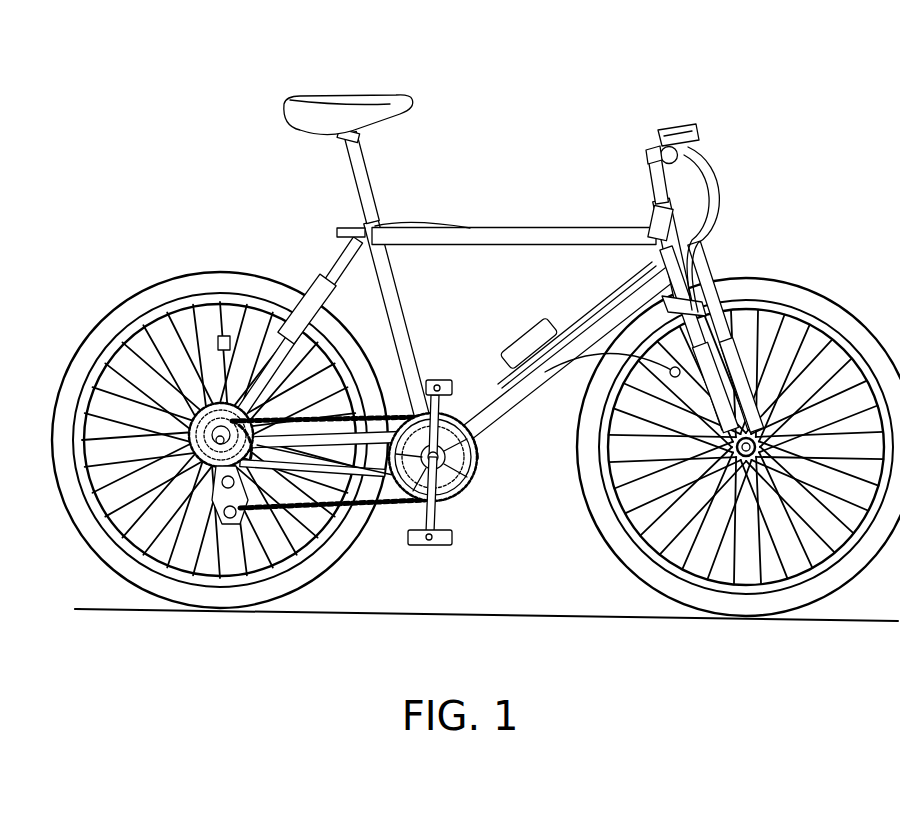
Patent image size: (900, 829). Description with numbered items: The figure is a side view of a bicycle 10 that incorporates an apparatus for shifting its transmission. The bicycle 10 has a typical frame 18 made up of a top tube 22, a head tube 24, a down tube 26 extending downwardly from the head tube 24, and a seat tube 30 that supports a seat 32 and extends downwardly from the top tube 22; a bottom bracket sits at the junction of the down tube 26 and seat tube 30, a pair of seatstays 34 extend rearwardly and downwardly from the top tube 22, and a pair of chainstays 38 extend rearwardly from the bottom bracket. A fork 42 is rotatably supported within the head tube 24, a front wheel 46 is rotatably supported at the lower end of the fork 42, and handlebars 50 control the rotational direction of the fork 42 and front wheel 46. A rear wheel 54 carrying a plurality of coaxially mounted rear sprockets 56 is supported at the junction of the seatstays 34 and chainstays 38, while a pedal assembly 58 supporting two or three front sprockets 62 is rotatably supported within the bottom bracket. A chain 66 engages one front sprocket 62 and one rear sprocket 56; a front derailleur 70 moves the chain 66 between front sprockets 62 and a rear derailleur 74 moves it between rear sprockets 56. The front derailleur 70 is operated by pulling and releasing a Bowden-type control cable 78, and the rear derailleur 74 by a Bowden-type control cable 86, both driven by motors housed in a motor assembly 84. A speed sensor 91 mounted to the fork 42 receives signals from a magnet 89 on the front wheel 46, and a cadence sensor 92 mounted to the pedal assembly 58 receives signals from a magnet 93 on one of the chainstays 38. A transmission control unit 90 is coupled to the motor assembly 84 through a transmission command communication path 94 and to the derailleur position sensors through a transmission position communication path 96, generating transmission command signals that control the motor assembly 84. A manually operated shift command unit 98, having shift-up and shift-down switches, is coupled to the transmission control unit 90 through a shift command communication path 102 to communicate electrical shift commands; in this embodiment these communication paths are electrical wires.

The bicycle 10 is at (518, 103).
The frame 18 is at (485, 316).
The top tube 22 is at (521, 226).
The head tube 24 is at (690, 253).
The down tube 26 is at (510, 405).
The seat tube 30 is at (418, 312).
The seat 32 is at (342, 108).
The seatstays 34 is at (324, 308).
The chainstays 38 is at (332, 332).
The fork 42 is at (747, 295).
The front wheel 46 is at (836, 305).
The handlebars 50 is at (660, 160).
The rear wheel 54 is at (202, 418).
The rear sprockets 56 is at (112, 345).
The pedal assembly 58 is at (279, 459).
The front sprockets 62 is at (478, 474).
The chain 66 is at (365, 500).
The front derailleur 70 is at (436, 383).
The rear derailleur 74 is at (214, 518).
The control cable 78 is at (445, 390).
The motor assembly 84 is at (520, 322).
The control cable 86 is at (224, 345).
The magnet 89 is at (668, 386).
The transmission control unit 90 is at (690, 128).
The speed sensor 91 is at (612, 350).
The cadence sensor 92 is at (440, 512).
The magnet 93 is at (356, 515).
The transmission command communication path 94 is at (612, 292).
The transmission position communication path 96 is at (579, 327).
The shift command unit 98 is at (648, 147).
The shift command communication path 102 is at (652, 187).